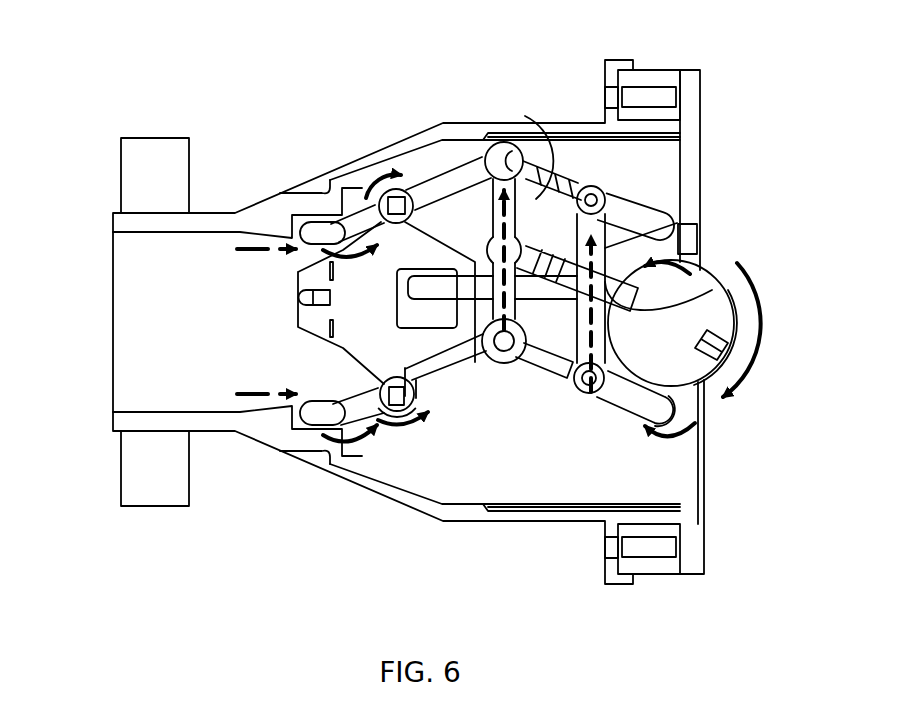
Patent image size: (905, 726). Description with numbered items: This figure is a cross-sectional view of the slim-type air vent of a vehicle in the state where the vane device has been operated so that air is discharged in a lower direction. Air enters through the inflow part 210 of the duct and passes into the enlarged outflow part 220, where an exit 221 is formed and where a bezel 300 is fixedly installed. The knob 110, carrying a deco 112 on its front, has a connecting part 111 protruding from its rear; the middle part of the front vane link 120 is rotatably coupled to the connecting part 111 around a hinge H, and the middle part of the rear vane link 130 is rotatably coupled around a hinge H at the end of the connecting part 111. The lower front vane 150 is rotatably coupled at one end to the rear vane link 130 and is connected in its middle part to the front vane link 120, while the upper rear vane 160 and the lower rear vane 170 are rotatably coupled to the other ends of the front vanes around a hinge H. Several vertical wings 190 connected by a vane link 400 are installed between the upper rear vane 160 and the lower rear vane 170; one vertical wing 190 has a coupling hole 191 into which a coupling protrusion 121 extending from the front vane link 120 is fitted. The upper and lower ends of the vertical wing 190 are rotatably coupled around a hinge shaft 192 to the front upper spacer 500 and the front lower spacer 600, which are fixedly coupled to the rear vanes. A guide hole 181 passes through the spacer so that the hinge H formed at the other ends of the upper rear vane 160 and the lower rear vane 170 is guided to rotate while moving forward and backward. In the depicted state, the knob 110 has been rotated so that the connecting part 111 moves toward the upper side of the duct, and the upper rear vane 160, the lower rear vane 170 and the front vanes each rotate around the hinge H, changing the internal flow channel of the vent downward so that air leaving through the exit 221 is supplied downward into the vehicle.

The knob 110 is at (700, 382).
The connecting part 111 is at (736, 263).
The deco 112 is at (714, 348).
The front vane link 120 is at (605, 248).
The coupling protrusion 121 is at (445, 290).
The rear vane link 130 is at (537, 176).
The lower front vane 150 is at (633, 410).
The upper rear vane 160 is at (442, 175).
The lower rear vane 170 is at (463, 373).
The guide hole 181 is at (300, 193).
The vertical wing 190 is at (418, 320).
The coupling hole 191 is at (360, 347).
The hinge shaft 192 is at (363, 195).
The inflow part 210 is at (153, 358).
The outflow part 220 is at (572, 453).
The exit 221 is at (690, 243).
The bezel 300 is at (702, 90).
The vane link 400 is at (300, 297).
The front upper spacer 500 is at (332, 180).
The front lower spacer 600 is at (455, 368).
The hinge H is at (500, 362).